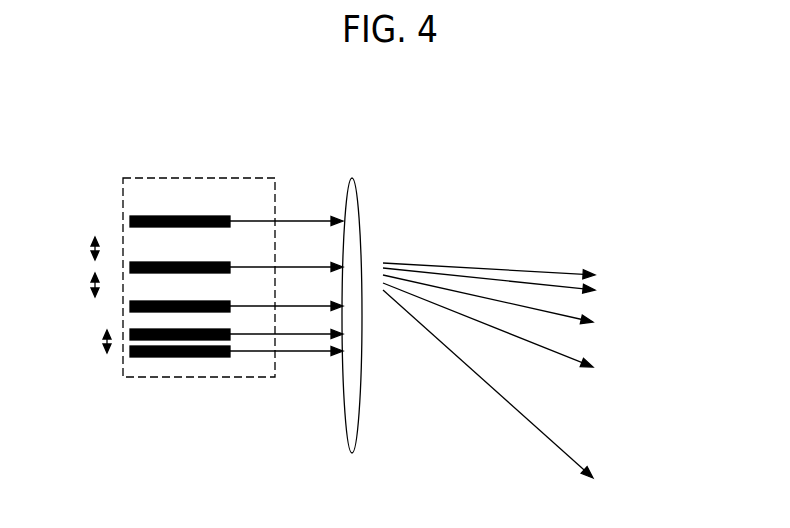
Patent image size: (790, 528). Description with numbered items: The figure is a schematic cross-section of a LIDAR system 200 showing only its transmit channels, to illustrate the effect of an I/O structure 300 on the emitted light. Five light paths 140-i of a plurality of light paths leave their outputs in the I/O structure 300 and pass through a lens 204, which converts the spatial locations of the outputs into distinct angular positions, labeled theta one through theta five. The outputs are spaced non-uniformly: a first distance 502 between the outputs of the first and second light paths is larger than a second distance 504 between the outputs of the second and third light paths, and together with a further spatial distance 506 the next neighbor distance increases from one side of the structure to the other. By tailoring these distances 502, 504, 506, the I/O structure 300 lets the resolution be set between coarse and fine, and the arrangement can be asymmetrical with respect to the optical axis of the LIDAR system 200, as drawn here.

The light paths 140-i is at (236, 245).
The lens 204 is at (356, 285).
The LIDAR system 200 is at (642, 180).
The I/O structure 300 is at (150, 378).
The first distance 502 is at (62, 249).
The second distance 504 is at (62, 285).
The spatial distance 506 is at (68, 344).